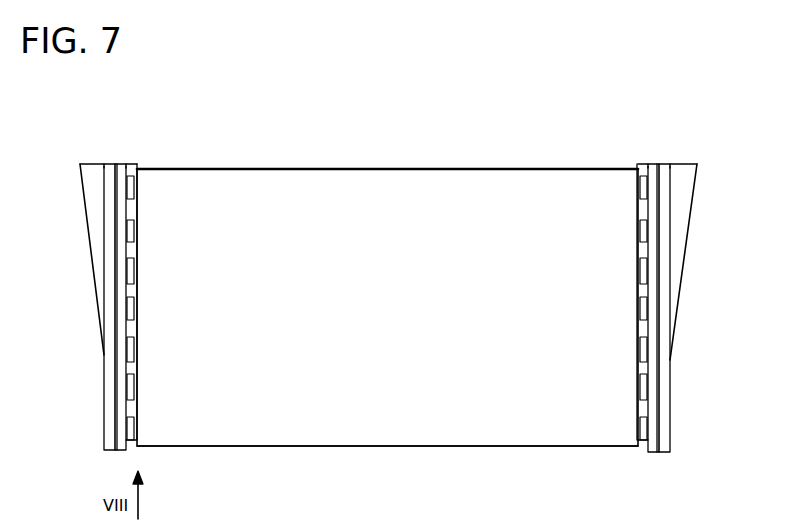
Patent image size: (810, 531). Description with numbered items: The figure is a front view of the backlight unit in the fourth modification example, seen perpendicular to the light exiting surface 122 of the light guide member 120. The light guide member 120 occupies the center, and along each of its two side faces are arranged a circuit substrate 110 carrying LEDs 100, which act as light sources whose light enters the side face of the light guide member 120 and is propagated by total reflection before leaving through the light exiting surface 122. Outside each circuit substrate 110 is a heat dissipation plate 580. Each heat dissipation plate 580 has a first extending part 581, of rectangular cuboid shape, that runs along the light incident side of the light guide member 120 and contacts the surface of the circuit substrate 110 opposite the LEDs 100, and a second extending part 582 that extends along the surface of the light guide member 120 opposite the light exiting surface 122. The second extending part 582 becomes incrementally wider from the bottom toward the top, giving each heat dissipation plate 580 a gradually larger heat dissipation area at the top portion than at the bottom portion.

The LED 100 is at (107, 347).
The circuit substrate 110 is at (118, 305).
The light guide member 120 is at (276, 185).
The light exiting surface 122 is at (437, 222).
The heat dissipation plate 580 is at (177, 112).
The first extending part 581 is at (113, 160).
The second extending part 582 is at (131, 160).